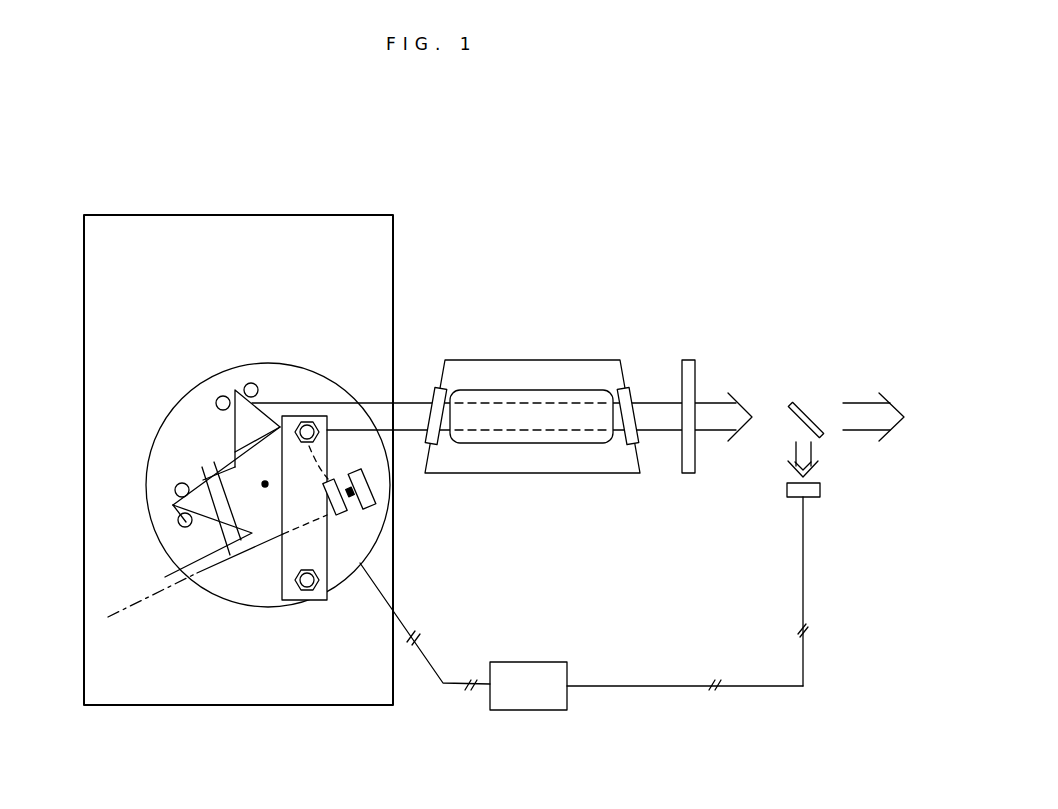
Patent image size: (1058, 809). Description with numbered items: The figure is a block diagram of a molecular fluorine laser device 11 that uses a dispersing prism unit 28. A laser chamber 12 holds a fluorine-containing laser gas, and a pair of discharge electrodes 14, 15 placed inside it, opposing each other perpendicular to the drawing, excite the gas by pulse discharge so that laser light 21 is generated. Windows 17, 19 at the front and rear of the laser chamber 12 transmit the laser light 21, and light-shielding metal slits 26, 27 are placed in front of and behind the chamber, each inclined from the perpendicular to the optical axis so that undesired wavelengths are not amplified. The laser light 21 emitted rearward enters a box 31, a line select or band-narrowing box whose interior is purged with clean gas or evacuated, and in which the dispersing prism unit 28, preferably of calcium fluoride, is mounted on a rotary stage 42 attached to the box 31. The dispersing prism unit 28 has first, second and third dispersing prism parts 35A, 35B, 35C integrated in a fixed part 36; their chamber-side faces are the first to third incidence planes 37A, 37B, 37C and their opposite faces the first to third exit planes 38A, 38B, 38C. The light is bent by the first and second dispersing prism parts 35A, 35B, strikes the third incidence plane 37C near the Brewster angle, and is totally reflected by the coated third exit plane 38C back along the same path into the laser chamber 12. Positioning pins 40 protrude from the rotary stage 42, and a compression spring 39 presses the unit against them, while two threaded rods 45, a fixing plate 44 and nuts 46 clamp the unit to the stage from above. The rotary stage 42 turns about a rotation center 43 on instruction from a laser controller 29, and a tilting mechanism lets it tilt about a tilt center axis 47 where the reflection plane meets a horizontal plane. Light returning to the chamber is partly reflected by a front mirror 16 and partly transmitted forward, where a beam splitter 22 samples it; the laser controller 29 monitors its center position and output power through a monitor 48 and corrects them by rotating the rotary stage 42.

The molecular fluorine laser device 11 is at (766, 286).
The laser chamber 12 is at (587, 358).
The discharge electrode 14 is at (531, 367).
The discharge electrode 15 is at (497, 390).
The front mirror 16 is at (700, 362).
The window 17 is at (637, 392).
The window 19 is at (440, 445).
The laser light 21 is at (213, 450).
The beam splitter 22 is at (802, 400).
The slit 26 is at (664, 372).
The slit 27 is at (422, 372).
The dispersing prism unit 28 is at (331, 303).
The laser controller 29 is at (531, 712).
The box 31 is at (336, 212).
The first dispersing prism part 35A is at (238, 388).
The second dispersing prism part 35B is at (176, 507).
The third dispersing prism part 35C is at (210, 592).
The fixed part 36 is at (268, 510).
The first incidence plane 37A is at (270, 412).
The second incidence plane 37B is at (200, 458).
The third incidence plane 37C is at (214, 566).
The first exit plane 38A is at (223, 430).
The second exit plane 38B is at (224, 546).
The third exit plane 38C is at (243, 555).
The compression spring 39 is at (352, 503).
The positioning pin 40 is at (220, 398).
The rotary stage 42 is at (352, 398).
The rotation center 43 is at (265, 482).
The fixing plate 44 is at (327, 600).
The rod 45 is at (305, 418).
The nut 46 is at (320, 415).
The tilt center axis 47 is at (150, 604).
The monitor 48 is at (816, 498).